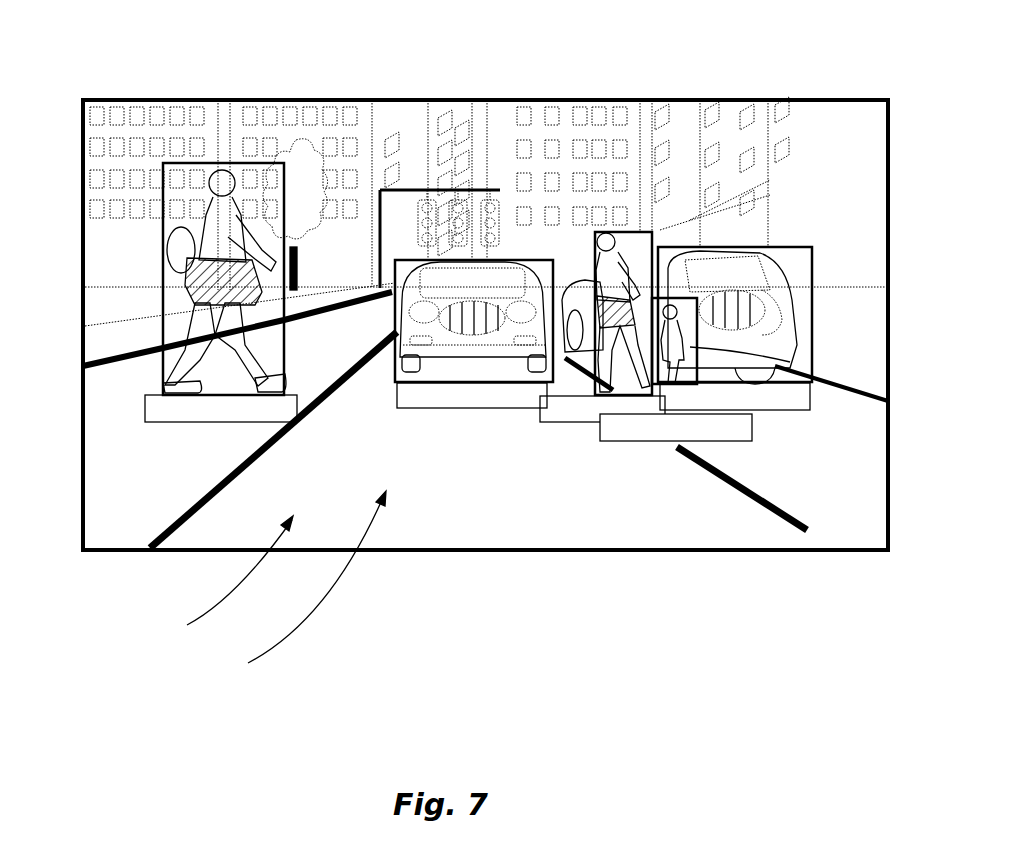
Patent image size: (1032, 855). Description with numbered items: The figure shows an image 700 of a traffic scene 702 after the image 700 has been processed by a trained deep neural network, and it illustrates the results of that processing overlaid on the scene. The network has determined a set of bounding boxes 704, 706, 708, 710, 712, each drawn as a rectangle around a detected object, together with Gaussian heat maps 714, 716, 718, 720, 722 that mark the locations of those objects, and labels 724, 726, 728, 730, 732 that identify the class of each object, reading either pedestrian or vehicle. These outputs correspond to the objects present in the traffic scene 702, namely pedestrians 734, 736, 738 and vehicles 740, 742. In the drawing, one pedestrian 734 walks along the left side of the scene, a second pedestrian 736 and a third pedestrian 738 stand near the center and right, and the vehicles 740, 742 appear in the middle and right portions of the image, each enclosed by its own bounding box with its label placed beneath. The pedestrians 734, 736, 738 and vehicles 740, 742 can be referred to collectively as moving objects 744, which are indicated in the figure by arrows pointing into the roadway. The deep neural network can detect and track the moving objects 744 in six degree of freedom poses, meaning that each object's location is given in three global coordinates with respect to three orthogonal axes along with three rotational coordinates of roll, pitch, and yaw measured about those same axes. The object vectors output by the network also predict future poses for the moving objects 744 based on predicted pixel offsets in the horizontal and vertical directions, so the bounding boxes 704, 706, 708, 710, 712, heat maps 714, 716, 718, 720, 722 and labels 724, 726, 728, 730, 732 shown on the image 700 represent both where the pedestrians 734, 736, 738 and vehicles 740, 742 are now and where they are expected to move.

The image 700 is at (175, 557).
The traffic scene 702 is at (216, 578).
The bounding box 704 is at (163, 190).
The bounding box 706 is at (590, 312).
The bounding box 708 is at (682, 300).
The bounding box 710 is at (392, 262).
The bounding box 712 is at (708, 247).
The Gaussian heat map 714 is at (185, 278).
The Gaussian heat map 716 is at (573, 290).
The Gaussian heat map 718 is at (693, 343).
The Gaussian heat map 720 is at (437, 317).
The Gaussian heat map 722 is at (725, 292).
The label 724 is at (145, 408).
The label 726 is at (563, 425).
The label 728 is at (665, 442).
The label 730 is at (465, 408).
The label 732 is at (778, 410).
The pedestrian 734 is at (210, 185).
The pedestrian 736 is at (603, 235).
The pedestrian 738 is at (667, 298).
The vehicle 740 is at (427, 290).
The vehicle 742 is at (778, 252).
The moving objects 744 is at (294, 584).